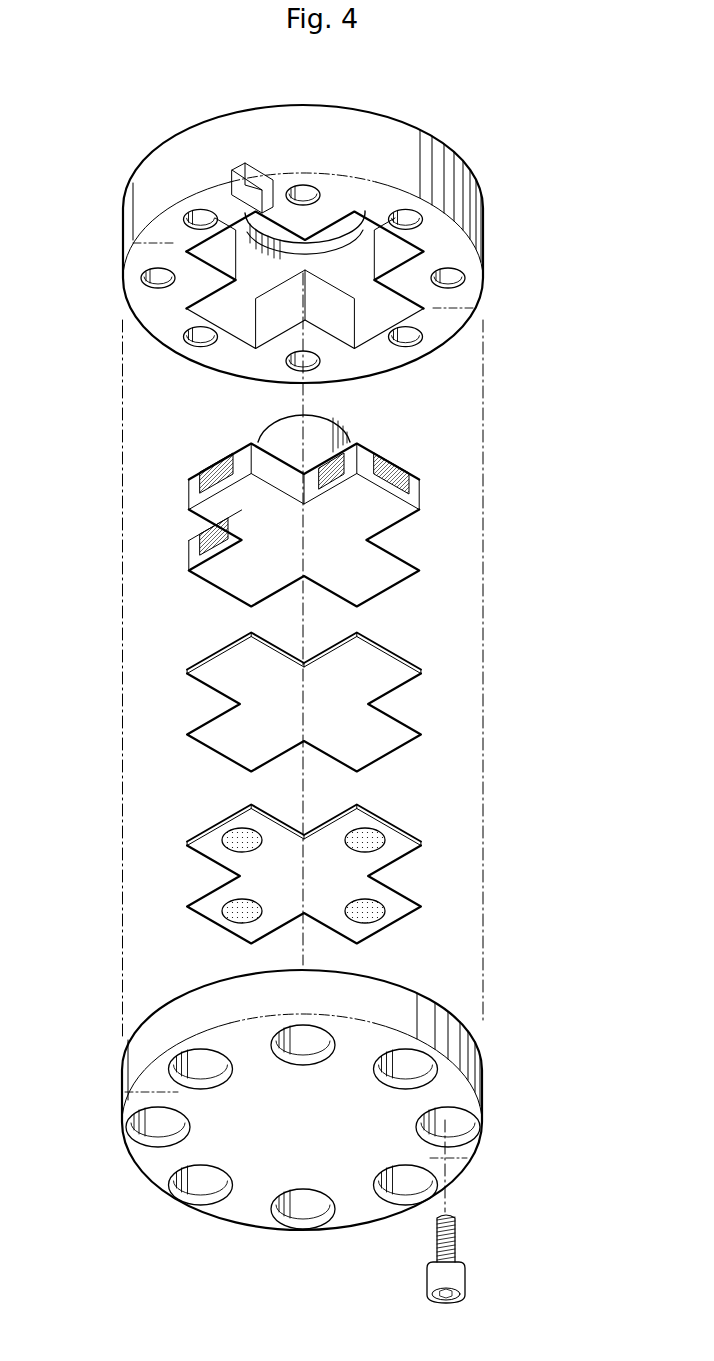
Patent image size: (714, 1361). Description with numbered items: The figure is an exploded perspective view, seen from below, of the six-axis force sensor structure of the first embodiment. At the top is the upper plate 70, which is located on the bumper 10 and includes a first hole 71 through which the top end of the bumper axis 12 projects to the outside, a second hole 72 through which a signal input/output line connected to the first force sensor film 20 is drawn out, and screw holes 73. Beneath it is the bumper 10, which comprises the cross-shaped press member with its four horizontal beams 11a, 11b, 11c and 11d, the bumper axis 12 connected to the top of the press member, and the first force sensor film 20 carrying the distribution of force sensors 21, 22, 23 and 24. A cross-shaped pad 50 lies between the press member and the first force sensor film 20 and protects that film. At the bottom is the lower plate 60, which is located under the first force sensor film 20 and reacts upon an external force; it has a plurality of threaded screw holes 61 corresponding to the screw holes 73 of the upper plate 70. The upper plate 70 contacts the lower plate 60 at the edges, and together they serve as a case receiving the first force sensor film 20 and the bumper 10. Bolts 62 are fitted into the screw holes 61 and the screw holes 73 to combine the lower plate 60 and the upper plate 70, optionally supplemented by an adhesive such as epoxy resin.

The upper plate 70 is at (143, 227).
The first hole 71 is at (363, 218).
The second hole 72 is at (243, 167).
The screw holes 73 is at (452, 279).
The bumper 10 is at (545, 433).
The horizontal beam 11a is at (385, 497).
The horizontal beam 11b is at (355, 583).
The horizontal beam 11c is at (224, 571).
The horizontal beam 11d is at (221, 496).
The bumper axis 12 is at (347, 420).
The pad 50 is at (218, 723).
The first force sensor film 20 is at (207, 857).
The force sensor 21 is at (373, 838).
The force sensor 22 is at (372, 912).
The force sensor 23 is at (227, 922).
The force sensor 24 is at (237, 833).
The lower plate 60 is at (128, 1082).
The screw holes 61 is at (482, 1124).
The bolts 62 is at (457, 1233).